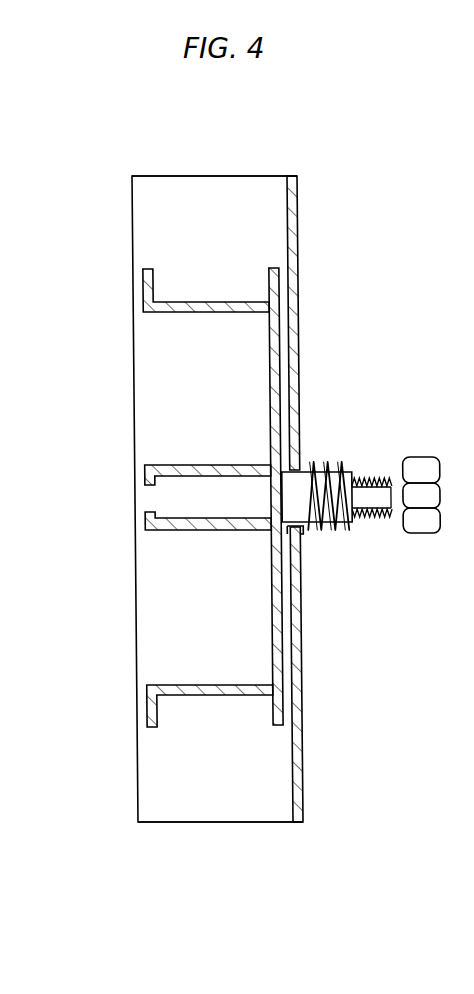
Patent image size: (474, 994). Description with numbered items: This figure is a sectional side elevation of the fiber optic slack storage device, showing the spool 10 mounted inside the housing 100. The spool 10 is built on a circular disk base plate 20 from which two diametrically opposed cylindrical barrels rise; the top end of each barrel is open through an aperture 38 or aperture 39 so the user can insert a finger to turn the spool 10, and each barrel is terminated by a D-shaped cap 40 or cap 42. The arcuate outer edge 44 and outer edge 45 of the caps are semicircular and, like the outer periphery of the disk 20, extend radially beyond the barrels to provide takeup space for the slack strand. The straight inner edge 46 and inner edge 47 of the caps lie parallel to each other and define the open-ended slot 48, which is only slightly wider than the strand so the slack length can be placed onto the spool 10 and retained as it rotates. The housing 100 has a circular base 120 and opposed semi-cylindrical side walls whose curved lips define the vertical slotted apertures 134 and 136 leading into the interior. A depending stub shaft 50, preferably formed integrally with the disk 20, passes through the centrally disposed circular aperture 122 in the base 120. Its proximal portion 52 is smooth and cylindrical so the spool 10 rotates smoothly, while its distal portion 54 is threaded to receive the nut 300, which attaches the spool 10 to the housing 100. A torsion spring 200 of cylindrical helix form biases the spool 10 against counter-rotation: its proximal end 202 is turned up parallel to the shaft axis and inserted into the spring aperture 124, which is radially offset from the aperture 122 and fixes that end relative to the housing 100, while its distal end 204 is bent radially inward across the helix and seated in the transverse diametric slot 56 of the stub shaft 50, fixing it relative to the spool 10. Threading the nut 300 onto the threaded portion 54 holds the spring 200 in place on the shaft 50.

The housing 100 is at (299, 213).
The base plate 20 is at (285, 740).
The slotted aperture 134 is at (205, 200).
The slotted aperture 136 is at (206, 793).
The spool 10 is at (281, 336).
The circular base 120 is at (292, 670).
The arcuate outer edge 44 is at (144, 269).
The aperture 38 is at (176, 385).
The D-shaped cap 40 is at (141, 468).
The inner edge 46 is at (145, 497).
The slot 48 is at (152, 498).
The inner edge 47 is at (145, 499).
The aperture 39 is at (176, 612).
The D-shaped cap 42 is at (141, 698).
The arcuate outer edge 45 is at (145, 727).
The stub shaft 50 is at (347, 524).
The distal portion 54 is at (367, 475).
The torsion spring 200 is at (337, 453).
The distal end 204 is at (349, 470).
The circular aperture 122 is at (302, 470).
The nut 300 is at (420, 453).
The transverse diametric slot 56 is at (401, 534).
The proximal portion 52 is at (296, 530).
The spring aperture 124 is at (299, 534).
The proximal end 202 is at (299, 537).